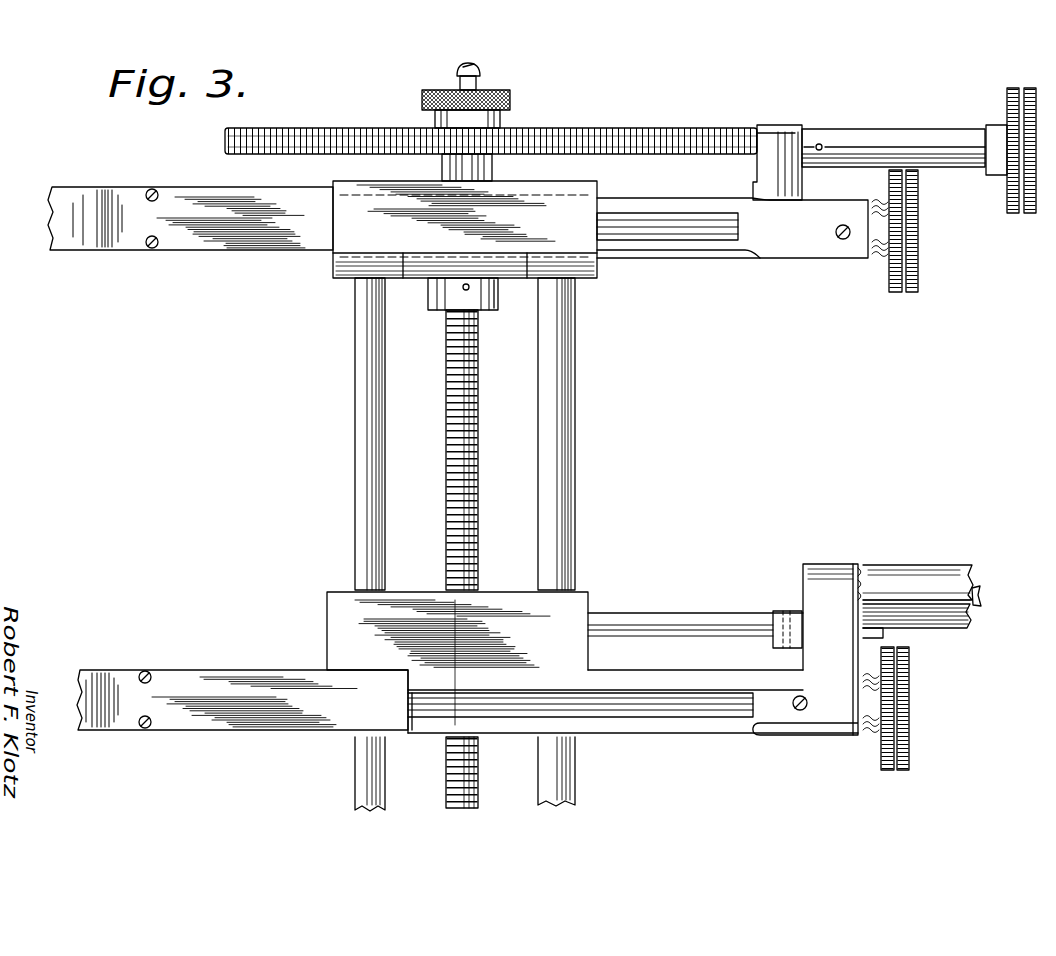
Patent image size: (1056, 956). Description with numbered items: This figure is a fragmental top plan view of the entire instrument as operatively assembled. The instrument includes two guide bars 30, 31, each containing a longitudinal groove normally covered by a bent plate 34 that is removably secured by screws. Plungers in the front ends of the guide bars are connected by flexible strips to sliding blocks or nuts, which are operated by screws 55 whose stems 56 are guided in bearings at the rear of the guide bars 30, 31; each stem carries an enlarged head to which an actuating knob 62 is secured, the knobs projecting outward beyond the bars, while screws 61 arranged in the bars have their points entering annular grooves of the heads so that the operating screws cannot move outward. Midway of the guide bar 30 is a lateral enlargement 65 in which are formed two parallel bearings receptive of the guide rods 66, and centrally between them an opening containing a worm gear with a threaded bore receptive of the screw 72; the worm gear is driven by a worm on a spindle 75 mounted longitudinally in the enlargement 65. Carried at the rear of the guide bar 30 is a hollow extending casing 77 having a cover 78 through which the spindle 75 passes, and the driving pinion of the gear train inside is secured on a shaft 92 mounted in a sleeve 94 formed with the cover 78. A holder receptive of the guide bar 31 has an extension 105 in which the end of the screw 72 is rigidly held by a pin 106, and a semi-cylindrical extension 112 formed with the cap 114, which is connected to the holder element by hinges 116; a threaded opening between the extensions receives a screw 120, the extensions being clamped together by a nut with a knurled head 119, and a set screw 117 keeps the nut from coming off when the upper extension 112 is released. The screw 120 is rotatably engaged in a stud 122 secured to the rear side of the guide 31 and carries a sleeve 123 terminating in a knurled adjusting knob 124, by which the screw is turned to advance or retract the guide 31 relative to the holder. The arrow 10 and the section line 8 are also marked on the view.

The section line 8- 8 is at (217, 539).
The direction arrow 10 is at (388, 62).
The guide bar 30 is at (679, 650).
The guide bar 31 is at (698, 250).
The bent plate 34 is at (282, 247).
The screw 55 is at (410, 730).
The stem 56 is at (655, 222).
The screw 61 is at (837, 238).
The actuating knob 62 is at (890, 278).
The lateral enlargement 65 is at (592, 620).
The guide rod 66 is at (365, 448).
The screw 72 is at (473, 500).
The spindle 75 is at (668, 632).
The casing 77 is at (815, 590).
The cover 78 is at (855, 590).
The shaft 92 is at (972, 606).
The sleeve 94 is at (905, 590).
The extension 105 is at (497, 300).
The pin 106 is at (463, 290).
The extension 112 is at (458, 165).
The cap 114 is at (353, 228).
The hinge 116 is at (418, 258).
The set screw 117 is at (480, 71).
The knurled head 119 is at (510, 100).
The screw 120 is at (636, 128).
The stud 122 is at (775, 160).
The sleeve 123 is at (908, 140).
The knurled adjusting knob 124 is at (1008, 183).